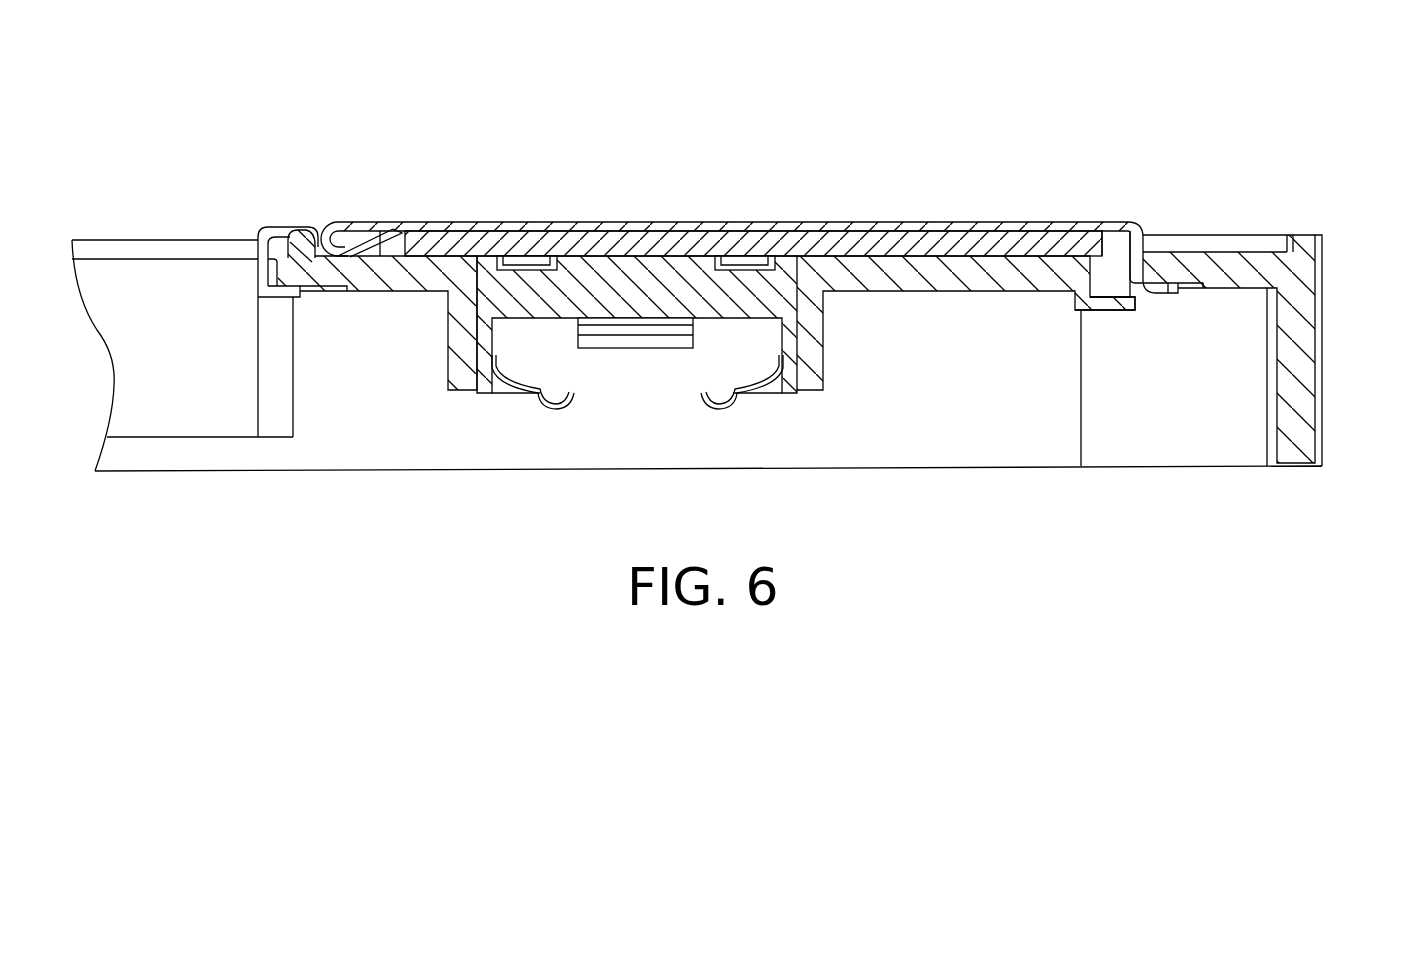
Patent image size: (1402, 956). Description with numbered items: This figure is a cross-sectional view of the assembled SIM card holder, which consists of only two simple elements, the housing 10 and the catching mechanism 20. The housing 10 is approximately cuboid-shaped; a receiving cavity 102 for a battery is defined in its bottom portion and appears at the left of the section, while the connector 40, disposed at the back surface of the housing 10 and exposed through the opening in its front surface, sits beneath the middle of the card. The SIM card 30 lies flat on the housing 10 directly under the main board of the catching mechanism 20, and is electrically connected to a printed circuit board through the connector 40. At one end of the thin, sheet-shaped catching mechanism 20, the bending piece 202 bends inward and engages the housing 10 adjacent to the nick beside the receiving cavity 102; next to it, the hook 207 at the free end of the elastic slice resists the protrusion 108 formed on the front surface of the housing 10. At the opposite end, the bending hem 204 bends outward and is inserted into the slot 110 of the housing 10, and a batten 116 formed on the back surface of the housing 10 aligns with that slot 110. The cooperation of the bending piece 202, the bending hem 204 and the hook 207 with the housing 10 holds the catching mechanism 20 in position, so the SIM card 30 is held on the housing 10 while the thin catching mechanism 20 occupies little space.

The housing 10 is at (1287, 285).
The catching mechanism 20 is at (773, 224).
The SIM card 30 is at (987, 232).
The connector 40 is at (927, 275).
The receiving cavity 102 is at (158, 293).
The protrusion 108 is at (297, 247).
The slot 110 is at (1117, 240).
The batten 116 is at (1127, 303).
The bending piece 202 is at (258, 272).
The bending hem 204 is at (1163, 284).
The hook 207 is at (330, 230).